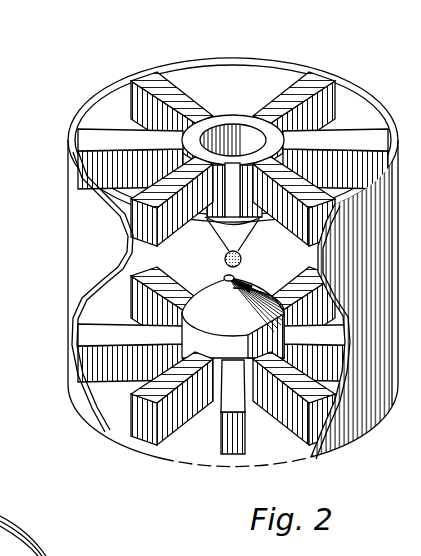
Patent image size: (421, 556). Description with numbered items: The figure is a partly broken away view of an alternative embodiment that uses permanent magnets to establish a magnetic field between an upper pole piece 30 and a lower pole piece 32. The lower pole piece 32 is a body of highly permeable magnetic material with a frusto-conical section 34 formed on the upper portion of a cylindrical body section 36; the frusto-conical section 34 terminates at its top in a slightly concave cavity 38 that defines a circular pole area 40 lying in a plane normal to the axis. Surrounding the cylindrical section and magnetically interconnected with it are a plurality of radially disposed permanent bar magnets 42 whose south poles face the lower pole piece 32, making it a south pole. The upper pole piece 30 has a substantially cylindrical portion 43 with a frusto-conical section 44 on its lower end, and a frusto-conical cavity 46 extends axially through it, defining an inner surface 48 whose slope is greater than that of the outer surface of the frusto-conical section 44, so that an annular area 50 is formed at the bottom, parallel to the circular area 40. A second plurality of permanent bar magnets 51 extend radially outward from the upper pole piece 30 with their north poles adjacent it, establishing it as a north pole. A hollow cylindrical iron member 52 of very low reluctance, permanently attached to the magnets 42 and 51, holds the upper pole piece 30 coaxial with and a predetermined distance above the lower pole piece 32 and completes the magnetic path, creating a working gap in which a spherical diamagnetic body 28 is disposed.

The spherical diamagnetic body 28 is at (243, 258).
The upper pole piece 30 is at (319, 262).
The lower pole piece 32 is at (273, 309).
The frusto-conical section 34 is at (248, 281).
The cylindrical body section 36 is at (240, 426).
The concave cavity 38 is at (225, 277).
The circular pole area 40 is at (156, 284).
The permanent bar magnets 42 is at (206, 370).
The cylindrical portion 43 is at (232, 120).
The frusto-conical section 44 is at (141, 236).
The frusto-conical cavity 46 is at (233, 146).
The inner surface 48 is at (316, 128).
The annular area 50 is at (128, 250).
The second plurality of permanent bar magnets 51 is at (227, 133).
The hollow cylindrical iron member 52 is at (72, 237).